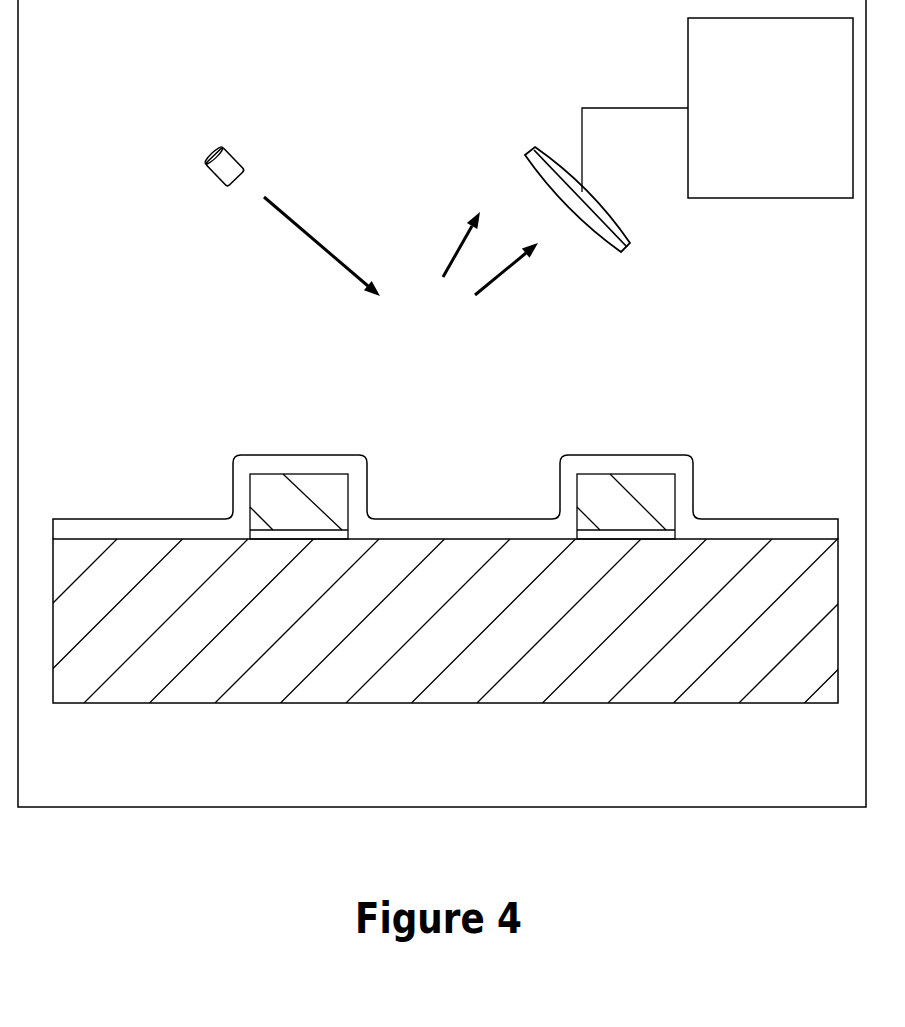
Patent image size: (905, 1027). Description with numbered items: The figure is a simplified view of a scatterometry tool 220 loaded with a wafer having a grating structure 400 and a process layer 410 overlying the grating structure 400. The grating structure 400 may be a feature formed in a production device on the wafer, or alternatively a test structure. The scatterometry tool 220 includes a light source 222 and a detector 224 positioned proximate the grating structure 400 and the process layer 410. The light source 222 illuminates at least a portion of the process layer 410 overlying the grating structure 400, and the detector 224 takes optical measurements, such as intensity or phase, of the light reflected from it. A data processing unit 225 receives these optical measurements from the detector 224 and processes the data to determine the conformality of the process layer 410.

The scatterometry tool 220 is at (858, 776).
The light source 222 is at (232, 167).
The detector 224 is at (533, 157).
The data processing unit 225 is at (791, 168).
The grating structure 400 is at (452, 522).
The process layer 410 is at (135, 530).